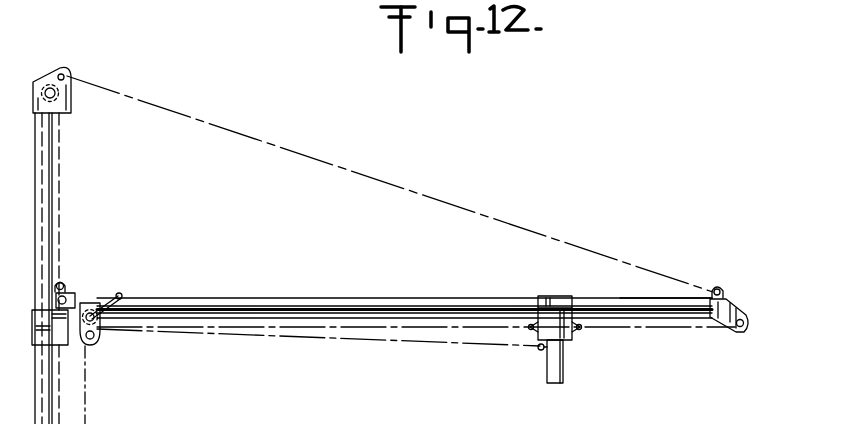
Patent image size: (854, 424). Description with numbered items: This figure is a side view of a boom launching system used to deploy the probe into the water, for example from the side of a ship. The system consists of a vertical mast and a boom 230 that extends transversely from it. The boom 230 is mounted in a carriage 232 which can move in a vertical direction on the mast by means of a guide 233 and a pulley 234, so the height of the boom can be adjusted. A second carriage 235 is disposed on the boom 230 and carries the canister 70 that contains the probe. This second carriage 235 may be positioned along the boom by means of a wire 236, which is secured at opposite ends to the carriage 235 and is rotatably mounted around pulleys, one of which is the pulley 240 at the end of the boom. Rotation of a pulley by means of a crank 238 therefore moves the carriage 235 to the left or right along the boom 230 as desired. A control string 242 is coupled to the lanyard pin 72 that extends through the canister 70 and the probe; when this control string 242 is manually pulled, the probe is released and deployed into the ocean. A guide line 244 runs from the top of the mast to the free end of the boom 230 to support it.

The canister 70 is at (566, 376).
The lanyard pin 72 is at (539, 351).
The boom 230 is at (640, 282).
The carriage 232 is at (68, 291).
The guide 233 is at (62, 174).
The pulley 234 is at (42, 74).
The second carriage 235 is at (550, 294).
The wire 236 is at (322, 313).
The crank 238 is at (124, 293).
The pulley 240 is at (98, 338).
The control string 242 is at (370, 339).
The guide line 244 is at (560, 240).